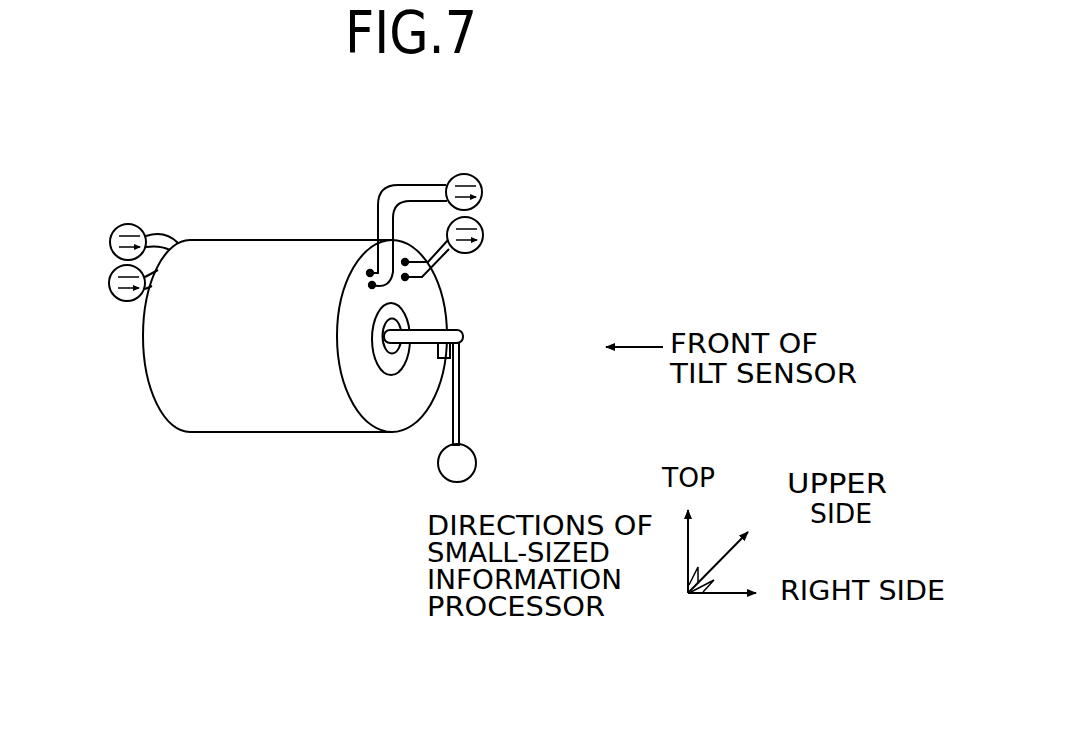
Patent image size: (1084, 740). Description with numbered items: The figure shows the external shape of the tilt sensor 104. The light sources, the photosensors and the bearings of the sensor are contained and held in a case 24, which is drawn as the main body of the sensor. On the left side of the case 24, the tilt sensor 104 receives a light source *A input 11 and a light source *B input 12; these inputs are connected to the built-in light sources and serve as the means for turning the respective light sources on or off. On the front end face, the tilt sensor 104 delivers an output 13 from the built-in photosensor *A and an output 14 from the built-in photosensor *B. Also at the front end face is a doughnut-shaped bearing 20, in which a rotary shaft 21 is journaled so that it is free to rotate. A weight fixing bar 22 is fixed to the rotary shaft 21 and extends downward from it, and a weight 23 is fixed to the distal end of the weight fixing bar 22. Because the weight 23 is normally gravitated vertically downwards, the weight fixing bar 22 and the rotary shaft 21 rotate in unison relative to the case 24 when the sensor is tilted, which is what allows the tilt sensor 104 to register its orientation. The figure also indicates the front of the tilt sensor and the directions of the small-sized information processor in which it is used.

The light source *A input 11 is at (115, 229).
The light source *B input 12 is at (118, 300).
The output from photosensor *A 13 is at (482, 235).
The output from photosensor *B 14 is at (482, 185).
The bearing 20 is at (405, 312).
The rotary shaft 21 is at (465, 331).
The weight fixing bar 22 is at (460, 378).
The weight 23 is at (462, 457).
The case 24 is at (150, 386).
The tilt sensor 104 is at (262, 295).